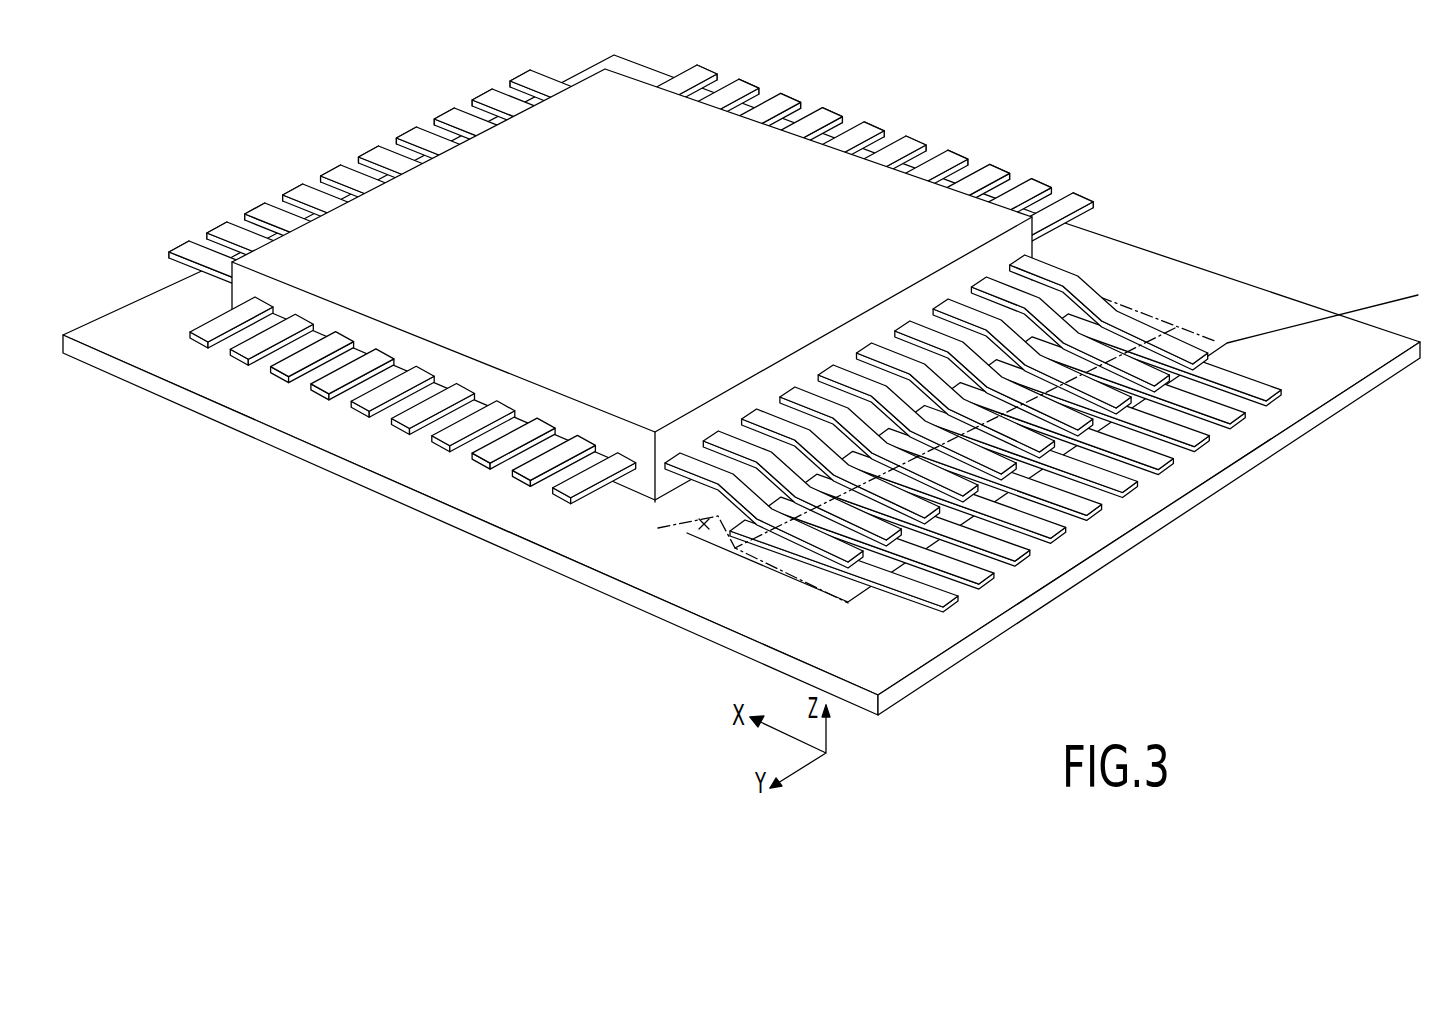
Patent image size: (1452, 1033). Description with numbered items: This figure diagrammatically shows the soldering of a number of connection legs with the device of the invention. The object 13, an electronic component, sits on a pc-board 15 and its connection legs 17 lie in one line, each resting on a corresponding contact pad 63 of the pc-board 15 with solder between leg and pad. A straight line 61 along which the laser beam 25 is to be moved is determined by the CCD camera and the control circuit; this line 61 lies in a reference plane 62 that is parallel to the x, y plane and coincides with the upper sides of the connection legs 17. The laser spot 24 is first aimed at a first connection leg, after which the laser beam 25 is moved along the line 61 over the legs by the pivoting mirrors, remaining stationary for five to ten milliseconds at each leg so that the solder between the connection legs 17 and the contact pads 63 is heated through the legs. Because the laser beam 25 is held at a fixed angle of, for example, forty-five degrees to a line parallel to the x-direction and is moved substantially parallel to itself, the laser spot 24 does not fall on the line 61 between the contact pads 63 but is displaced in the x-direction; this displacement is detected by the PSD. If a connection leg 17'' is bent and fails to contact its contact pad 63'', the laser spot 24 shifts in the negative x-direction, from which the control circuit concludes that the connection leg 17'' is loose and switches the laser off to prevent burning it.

The object 13 is at (281, 259).
The pc-board 15 is at (1172, 492).
The connection legs 17 is at (936, 449).
The bent connection leg 17'' is at (944, 516).
The laser spot 24 is at (1070, 380).
The laser beam 25 is at (1257, 337).
The line 61 is at (1178, 316).
The reference plane 62 is at (739, 559).
The contact pads 63 is at (1024, 489).
The contact pad 63'' is at (1000, 530).